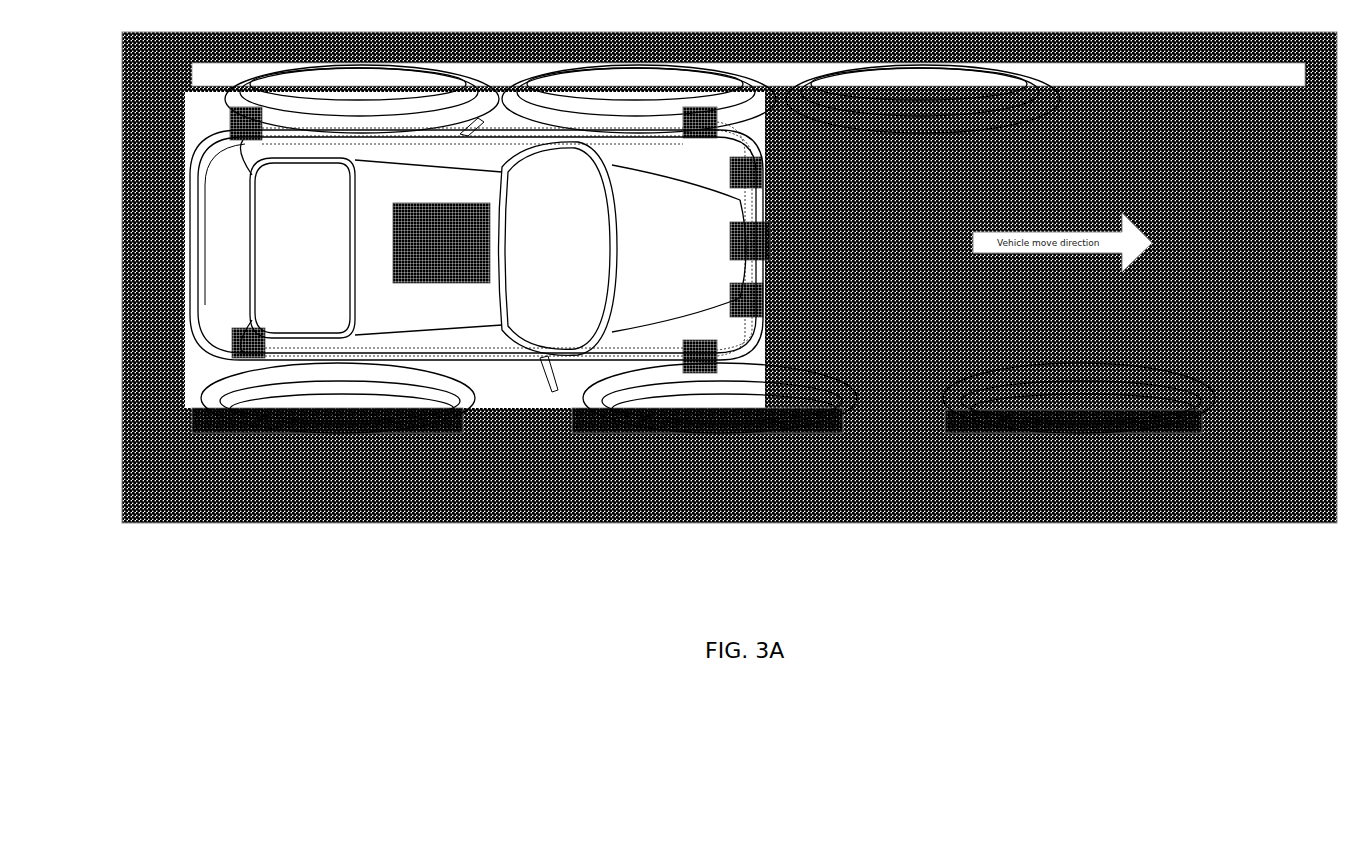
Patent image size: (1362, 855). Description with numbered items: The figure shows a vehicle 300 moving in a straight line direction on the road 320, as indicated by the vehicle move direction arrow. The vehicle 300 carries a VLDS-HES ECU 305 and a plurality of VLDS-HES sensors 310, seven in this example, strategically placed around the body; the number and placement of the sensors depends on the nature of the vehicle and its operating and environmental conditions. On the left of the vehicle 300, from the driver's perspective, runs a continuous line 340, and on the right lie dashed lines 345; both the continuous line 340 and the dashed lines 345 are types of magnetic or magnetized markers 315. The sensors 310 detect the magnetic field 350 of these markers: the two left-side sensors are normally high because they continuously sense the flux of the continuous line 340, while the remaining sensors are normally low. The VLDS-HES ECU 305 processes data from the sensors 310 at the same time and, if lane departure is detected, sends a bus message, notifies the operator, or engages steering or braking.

The vehicle 300 is at (476, 255).
The VLDS-HES ECU 305 is at (493, 220).
The VLDS-HES sensors 310 is at (240, 328).
The magnetic or magnetized markers 315 is at (1083, 413).
The road 320 is at (729, 277).
The continuous line 340 is at (1225, 333).
The dashed lines 345 is at (850, 433).
The magnetic field 350 is at (757, 362).